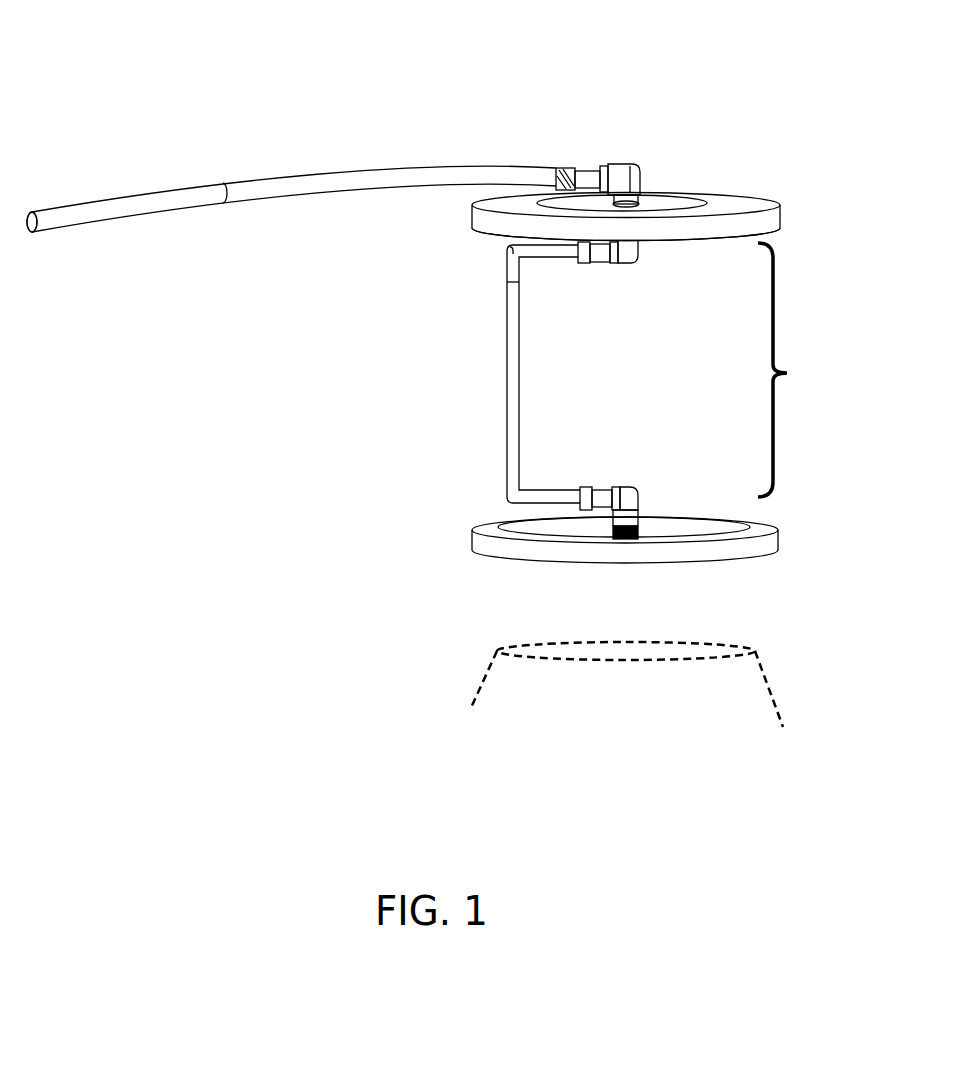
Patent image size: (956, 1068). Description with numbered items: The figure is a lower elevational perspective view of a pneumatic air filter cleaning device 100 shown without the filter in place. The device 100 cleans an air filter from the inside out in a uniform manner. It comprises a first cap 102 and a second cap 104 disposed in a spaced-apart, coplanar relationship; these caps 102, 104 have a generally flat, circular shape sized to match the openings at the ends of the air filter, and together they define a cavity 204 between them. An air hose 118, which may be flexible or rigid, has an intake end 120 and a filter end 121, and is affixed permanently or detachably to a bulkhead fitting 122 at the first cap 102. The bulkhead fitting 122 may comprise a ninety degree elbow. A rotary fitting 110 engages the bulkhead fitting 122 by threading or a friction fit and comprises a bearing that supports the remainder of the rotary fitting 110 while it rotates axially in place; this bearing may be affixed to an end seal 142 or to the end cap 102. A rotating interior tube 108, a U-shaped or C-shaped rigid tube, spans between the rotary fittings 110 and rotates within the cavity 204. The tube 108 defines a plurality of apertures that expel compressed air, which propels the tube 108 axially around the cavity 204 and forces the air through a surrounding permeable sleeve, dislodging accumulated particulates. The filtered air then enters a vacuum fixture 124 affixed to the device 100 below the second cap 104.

The pneumatic air filter cleaning device 100 is at (88, 62).
The first cap 102 is at (590, 202).
The second cap 104 is at (495, 545).
The rotating interior tube 108 is at (512, 311).
The rotary fitting 110 is at (662, 300).
The air hose 118 is at (100, 212).
The intake end 120 is at (52, 218).
The filter end 121 is at (547, 176).
The bulkhead fitting 122 is at (639, 176).
The vacuum fixture 124 is at (517, 672).
The end seal 142 is at (510, 227).
The cavity 204 is at (785, 372).